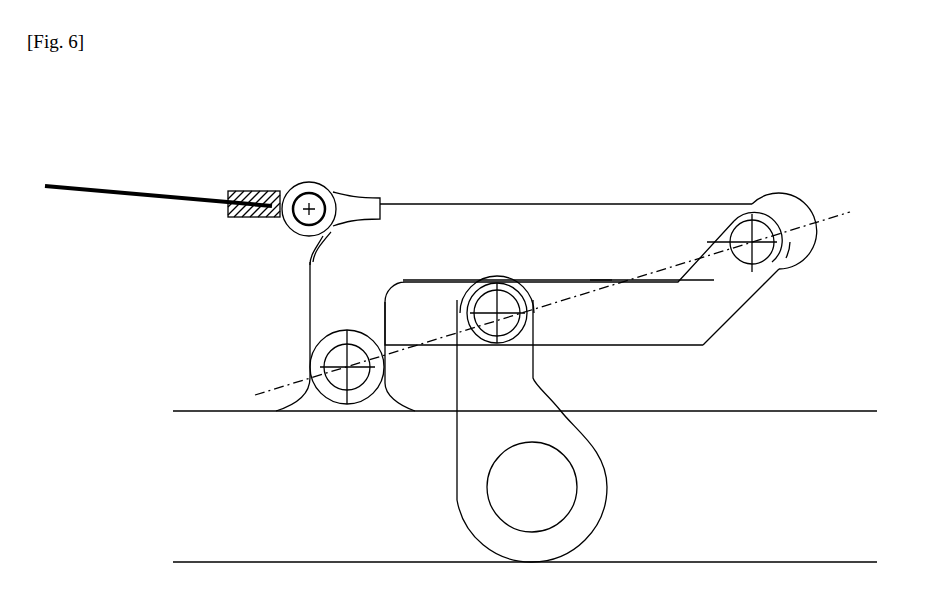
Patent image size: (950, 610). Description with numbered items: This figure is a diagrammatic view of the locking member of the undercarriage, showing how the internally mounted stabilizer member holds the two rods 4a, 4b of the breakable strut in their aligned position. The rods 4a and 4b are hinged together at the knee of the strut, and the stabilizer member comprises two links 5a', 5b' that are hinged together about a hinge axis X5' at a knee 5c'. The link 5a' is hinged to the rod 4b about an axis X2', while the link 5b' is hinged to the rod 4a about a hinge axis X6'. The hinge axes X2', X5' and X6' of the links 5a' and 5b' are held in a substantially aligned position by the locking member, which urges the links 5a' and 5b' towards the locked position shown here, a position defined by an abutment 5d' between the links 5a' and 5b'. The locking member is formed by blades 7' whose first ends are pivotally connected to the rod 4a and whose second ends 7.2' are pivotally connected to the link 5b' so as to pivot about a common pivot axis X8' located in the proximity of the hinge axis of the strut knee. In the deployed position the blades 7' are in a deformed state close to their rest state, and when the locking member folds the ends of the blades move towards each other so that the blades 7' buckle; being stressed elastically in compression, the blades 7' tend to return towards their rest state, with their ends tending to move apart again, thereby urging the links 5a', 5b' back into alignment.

The blades 7' is at (158, 148).
The second ends 7.2' is at (211, 153).
The common pivot axis X8' is at (331, 177).
The link 5b' is at (598, 236).
The link 5a' is at (583, 278).
The knee 5c' is at (821, 268).
The abutment 5d' is at (597, 223).
The hinge axis X5' is at (763, 225).
The hinge axis X2' is at (468, 309).
The hinge axis X6' is at (314, 367).
The rod 4a is at (321, 412).
The rod 4b is at (631, 431).